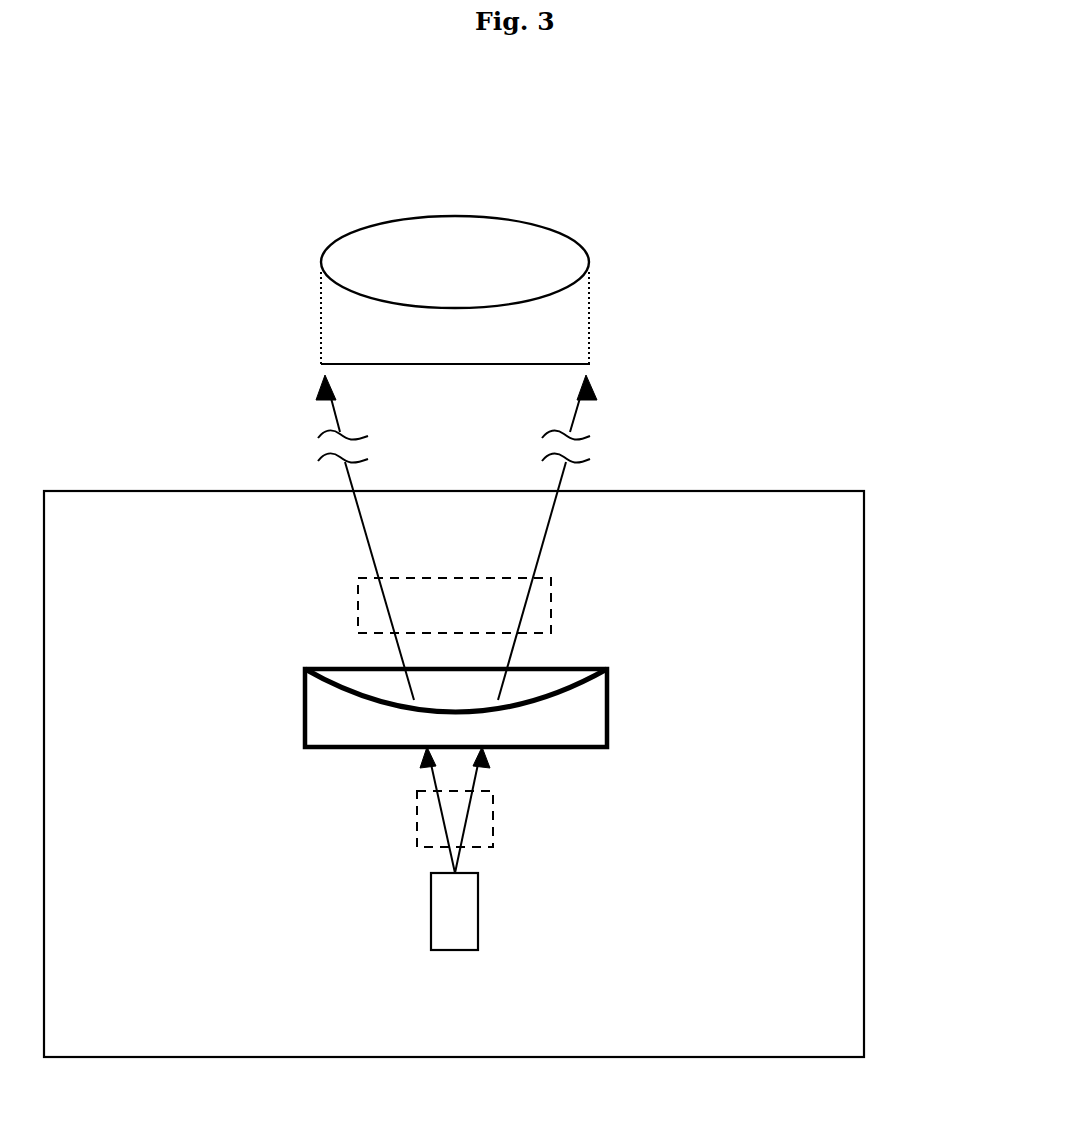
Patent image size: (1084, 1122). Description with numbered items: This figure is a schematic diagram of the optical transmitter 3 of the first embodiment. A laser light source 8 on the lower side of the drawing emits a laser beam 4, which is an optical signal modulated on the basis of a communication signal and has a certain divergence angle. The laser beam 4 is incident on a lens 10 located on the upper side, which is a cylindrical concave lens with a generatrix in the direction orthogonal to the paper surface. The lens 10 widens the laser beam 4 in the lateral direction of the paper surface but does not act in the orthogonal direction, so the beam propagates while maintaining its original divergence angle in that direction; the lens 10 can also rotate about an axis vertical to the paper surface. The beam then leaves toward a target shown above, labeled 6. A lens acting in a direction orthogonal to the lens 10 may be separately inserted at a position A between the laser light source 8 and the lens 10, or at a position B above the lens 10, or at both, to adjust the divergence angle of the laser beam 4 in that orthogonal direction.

The optical transmitter 3 is at (864, 548).
The laser beam 4 is at (576, 418).
The wafer 6 is at (557, 230).
The laser light source 8 is at (478, 908).
The lens 10 is at (607, 703).
The position A is at (493, 818).
The position B is at (551, 603).